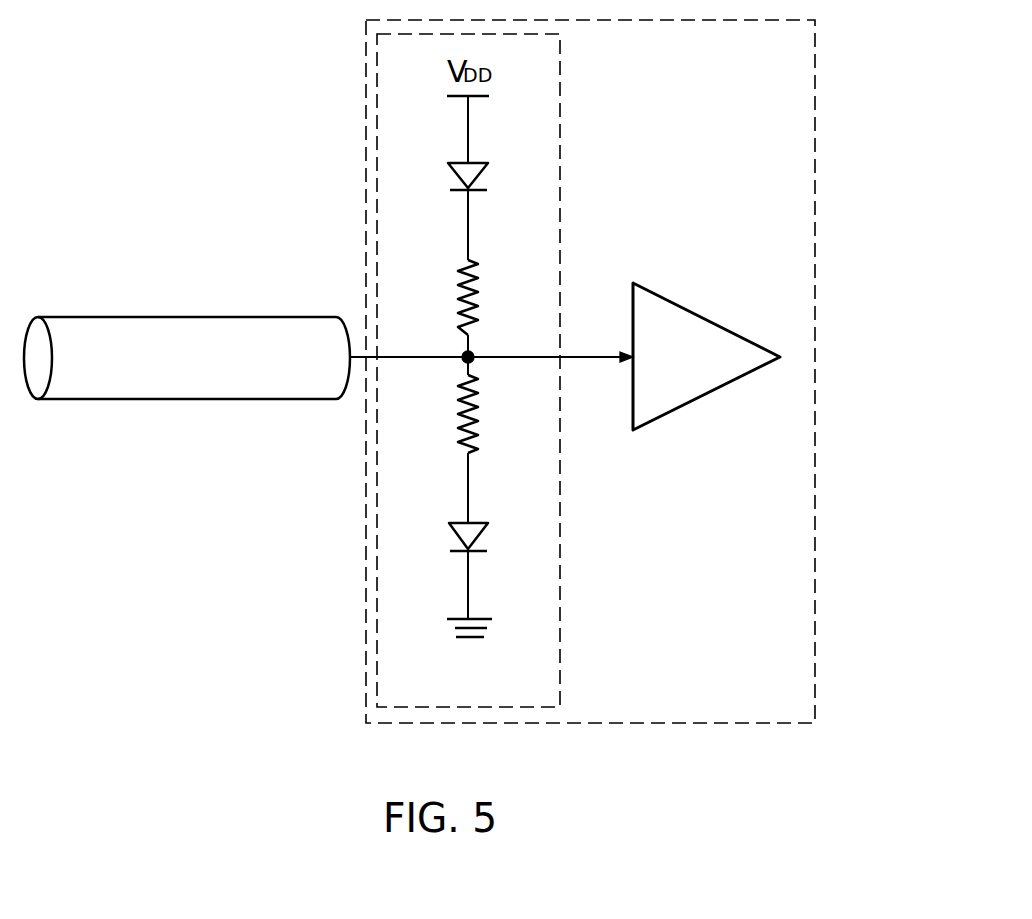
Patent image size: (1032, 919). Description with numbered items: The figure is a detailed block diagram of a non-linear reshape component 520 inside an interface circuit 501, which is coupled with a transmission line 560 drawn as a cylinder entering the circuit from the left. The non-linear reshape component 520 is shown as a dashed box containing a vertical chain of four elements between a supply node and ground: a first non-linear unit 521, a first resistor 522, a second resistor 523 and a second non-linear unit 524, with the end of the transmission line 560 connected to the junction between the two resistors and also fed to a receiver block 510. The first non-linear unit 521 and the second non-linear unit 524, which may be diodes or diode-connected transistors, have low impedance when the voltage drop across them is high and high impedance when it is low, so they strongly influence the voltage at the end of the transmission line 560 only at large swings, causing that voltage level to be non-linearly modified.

The interface circuit 501 is at (815, 142).
The receiver RX 510 is at (709, 321).
The non-linear reshape component 520 is at (560, 155).
The first non-linear unit 521 is at (470, 177).
The first resistor 522 is at (475, 293).
The second resistor 523 is at (475, 417).
The second non-linear unit 524 is at (470, 540).
The transmission line 560 is at (187, 316).